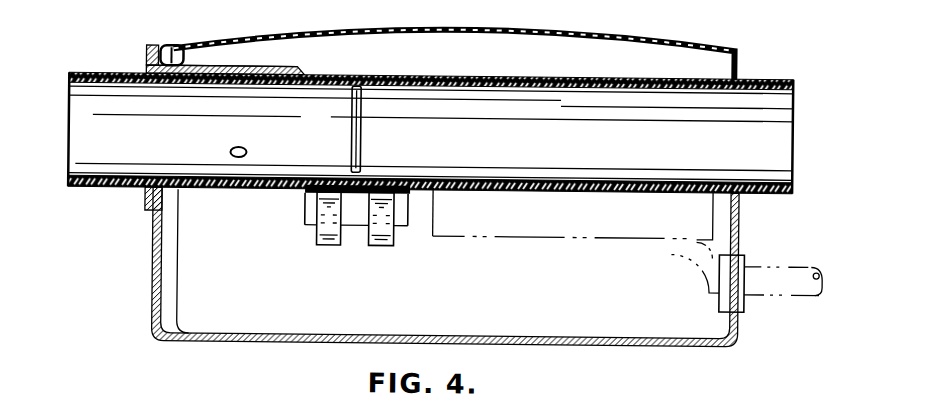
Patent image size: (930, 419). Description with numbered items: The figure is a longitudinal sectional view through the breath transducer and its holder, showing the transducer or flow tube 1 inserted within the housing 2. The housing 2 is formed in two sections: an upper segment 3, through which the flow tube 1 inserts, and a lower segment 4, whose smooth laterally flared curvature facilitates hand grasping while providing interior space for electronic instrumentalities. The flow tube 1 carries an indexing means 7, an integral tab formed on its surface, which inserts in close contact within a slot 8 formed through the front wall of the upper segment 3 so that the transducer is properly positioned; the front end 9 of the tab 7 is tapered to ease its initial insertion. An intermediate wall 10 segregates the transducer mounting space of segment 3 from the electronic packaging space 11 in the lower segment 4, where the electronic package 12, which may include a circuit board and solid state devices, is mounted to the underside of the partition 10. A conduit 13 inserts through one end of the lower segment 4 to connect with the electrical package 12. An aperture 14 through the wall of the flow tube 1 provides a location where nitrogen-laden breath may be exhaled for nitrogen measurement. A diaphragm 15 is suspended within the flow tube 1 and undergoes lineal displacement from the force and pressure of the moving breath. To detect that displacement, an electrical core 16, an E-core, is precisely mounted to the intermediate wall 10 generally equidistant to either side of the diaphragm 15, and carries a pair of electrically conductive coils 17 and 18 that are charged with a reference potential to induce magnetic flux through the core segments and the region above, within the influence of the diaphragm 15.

The transducer or flow tube 1 is at (67, 187).
The housing 2 is at (152, 243).
The upper segment 3 is at (608, 52).
The lower segment 4 is at (198, 297).
The indexing means 7 is at (225, 65).
The slot 8 is at (172, 48).
The front end 9 is at (301, 77).
The intermediate wall 10 is at (290, 193).
The electronic packaging space 11 is at (465, 287).
The electronic package 12 is at (623, 224).
The conduit 13 is at (753, 270).
The aperture 14 is at (245, 151).
The diaphragm 15 is at (362, 141).
The electrical core 16 is at (306, 229).
The electrically conductive coil 17 is at (332, 244).
The electrically conductive coil 18 is at (383, 243).